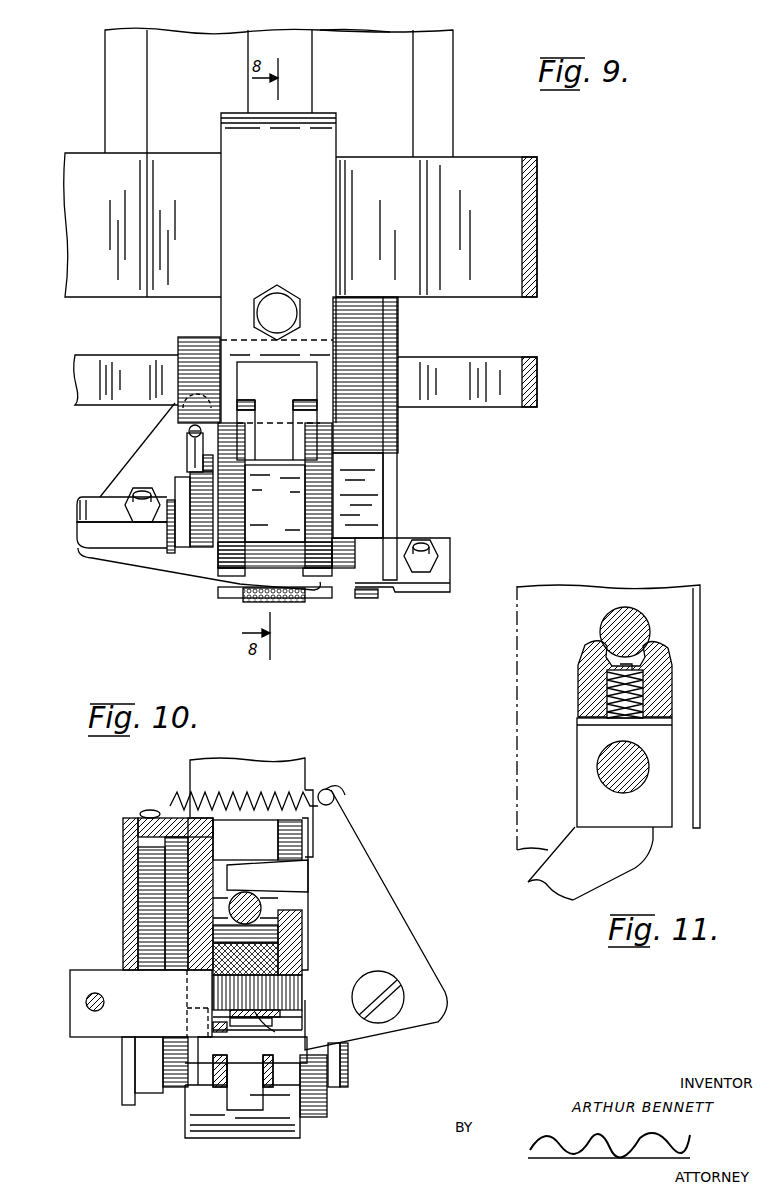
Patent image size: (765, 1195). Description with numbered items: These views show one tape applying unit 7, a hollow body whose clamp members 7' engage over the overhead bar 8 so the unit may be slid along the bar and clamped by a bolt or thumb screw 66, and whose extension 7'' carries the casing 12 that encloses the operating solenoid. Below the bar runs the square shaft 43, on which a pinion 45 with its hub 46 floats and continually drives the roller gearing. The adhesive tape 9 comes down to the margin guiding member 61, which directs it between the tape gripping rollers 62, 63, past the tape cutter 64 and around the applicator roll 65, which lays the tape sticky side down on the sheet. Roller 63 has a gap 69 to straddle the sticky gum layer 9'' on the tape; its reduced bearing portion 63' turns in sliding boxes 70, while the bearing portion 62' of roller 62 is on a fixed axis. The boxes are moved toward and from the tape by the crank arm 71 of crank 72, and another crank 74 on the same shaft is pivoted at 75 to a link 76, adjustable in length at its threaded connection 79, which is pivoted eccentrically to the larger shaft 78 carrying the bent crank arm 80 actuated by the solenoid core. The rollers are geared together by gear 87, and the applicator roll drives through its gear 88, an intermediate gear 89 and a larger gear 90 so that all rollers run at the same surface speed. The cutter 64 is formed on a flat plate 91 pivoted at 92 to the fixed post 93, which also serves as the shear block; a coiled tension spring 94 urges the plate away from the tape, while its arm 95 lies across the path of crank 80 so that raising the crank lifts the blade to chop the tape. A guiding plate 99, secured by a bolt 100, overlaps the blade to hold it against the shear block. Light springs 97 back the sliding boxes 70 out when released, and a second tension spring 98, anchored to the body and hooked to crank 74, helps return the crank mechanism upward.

In FIG. 9, the tape applying unit (hollow body) 7 is at (273, 606).
In FIG. 11, the tape applying unit (hollow body) 7 is at (596, 717).
In FIG. 9, the clamp members 7' is at (278, 268).
In FIG. 9, the extension of body 7'' is at (355, 29).
In FIG. 9, the overhead bar 8 is at (522, 221).
In FIG. 10, the adhesive tape 9 is at (257, 1010).
In FIG. 10, the sticky gum layer 9'' is at (279, 1033).
In FIG. 9, the casing 12 is at (443, 84).
In FIG. 9, the square or spline shaft 43 is at (100, 362).
In FIG. 9, the pinion 45 is at (395, 368).
In FIG. 9, the hub 46 is at (195, 345).
In FIG. 9, the margin guiding member 61 is at (290, 403).
In FIG. 10, the tape gripping roller 62 is at (282, 942).
In FIG. 11, the reduced bearing portion of roller 62 62' is at (641, 624).
In FIG. 10, the tape gripping roller 63 is at (239, 1099).
In FIG. 11, the reduced bearing portion of roller 63 63' is at (623, 779).
In FIG. 10, the tape cutter 64 is at (232, 1032).
In FIG. 9, the applicator roll 65 is at (286, 603).
In FIG. 9, the bolt or thumb screw 66 is at (279, 292).
In FIG. 10, the gap 69 is at (268, 1078).
In FIG. 11, the sliding boxes 70 is at (660, 766).
In FIG. 10, the crank arm 71 is at (200, 1105).
In FIG. 11, the crank arm 71 is at (625, 862).
In FIG. 9, the crank 72 is at (284, 520).
In FIG. 10, the crank 72 is at (232, 1138).
In FIG. 9, the crank 74 is at (205, 548).
In FIG. 10, the crank 74 is at (328, 1100).
In FIG. 9, the pivot 75 is at (165, 555).
In FIG. 10, the pivot 75 is at (349, 1068).
In FIG. 9, the link 76 is at (190, 450).
In FIG. 10, the link 76 is at (342, 1055).
In FIG. 10, the larger shaft 78 is at (282, 896).
In FIG. 9, the threaded connection 79 is at (189, 434).
In FIG. 10, the bent crank arm 80 is at (245, 893).
In FIG. 9, the gear 87 is at (346, 570).
In FIG. 9, the gear 88 is at (366, 598).
In FIG. 10, the gear 88 is at (165, 1073).
In FIG. 10, the intermediate gear 89 is at (148, 920).
In FIG. 10, the gear 90 is at (135, 836).
In FIG. 9, the flat plate 91 is at (148, 434).
In FIG. 10, the flat plate 91 is at (418, 947).
In FIG. 9, the pivot 92 is at (138, 492).
In FIG. 10, the pivot 92 is at (400, 992).
In FIG. 9, the fixed post / shear block 93 is at (77, 522).
In FIG. 10, the fixed post / shear block 93 is at (300, 983).
In FIG. 10, the coiled tension spring 94 is at (252, 795).
In FIG. 10, the arm 95 is at (300, 883).
In FIG. 11, the light springs 97 is at (632, 706).
In FIG. 9, the coiled tension spring 98 is at (205, 465).
In FIG. 9, the guiding plate 99 is at (452, 577).
In FIG. 10, the guiding plate 99 is at (100, 975).
In FIG. 9, the bolt 100 is at (422, 542).
In FIG. 10, the bolt 100 is at (85, 1003).